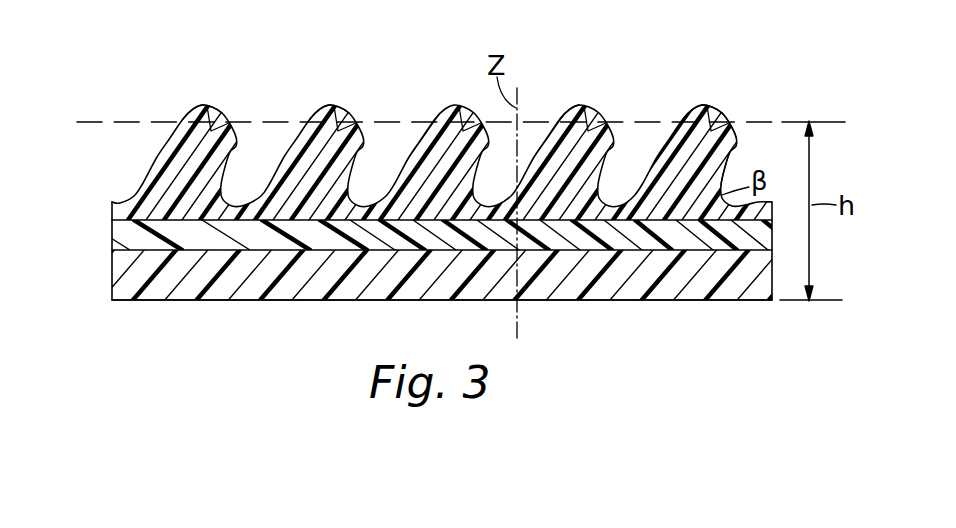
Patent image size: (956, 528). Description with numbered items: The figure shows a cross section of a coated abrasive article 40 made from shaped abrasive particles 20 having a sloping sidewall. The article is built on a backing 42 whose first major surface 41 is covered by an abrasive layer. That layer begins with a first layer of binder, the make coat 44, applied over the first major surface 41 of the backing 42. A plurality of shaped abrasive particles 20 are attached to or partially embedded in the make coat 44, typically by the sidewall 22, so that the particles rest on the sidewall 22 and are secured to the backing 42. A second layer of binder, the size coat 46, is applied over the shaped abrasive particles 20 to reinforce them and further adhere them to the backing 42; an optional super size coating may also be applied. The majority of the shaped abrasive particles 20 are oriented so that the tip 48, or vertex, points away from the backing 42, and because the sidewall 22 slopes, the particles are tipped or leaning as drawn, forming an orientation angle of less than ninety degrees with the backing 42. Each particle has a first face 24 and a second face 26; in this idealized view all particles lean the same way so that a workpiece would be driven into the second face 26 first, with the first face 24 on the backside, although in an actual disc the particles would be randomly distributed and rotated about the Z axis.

The coated abrasive article 40 is at (158, 76).
The shaped abrasive particles 20 is at (425, 147).
The tip 48 is at (333, 114).
The size coat 46 is at (585, 113).
The first face 24 is at (700, 138).
The sidewall 22 is at (704, 130).
The second face 26 is at (727, 158).
The make coat 44 is at (125, 242).
The backing 42 is at (138, 279).
The first major surface 41 is at (183, 248).